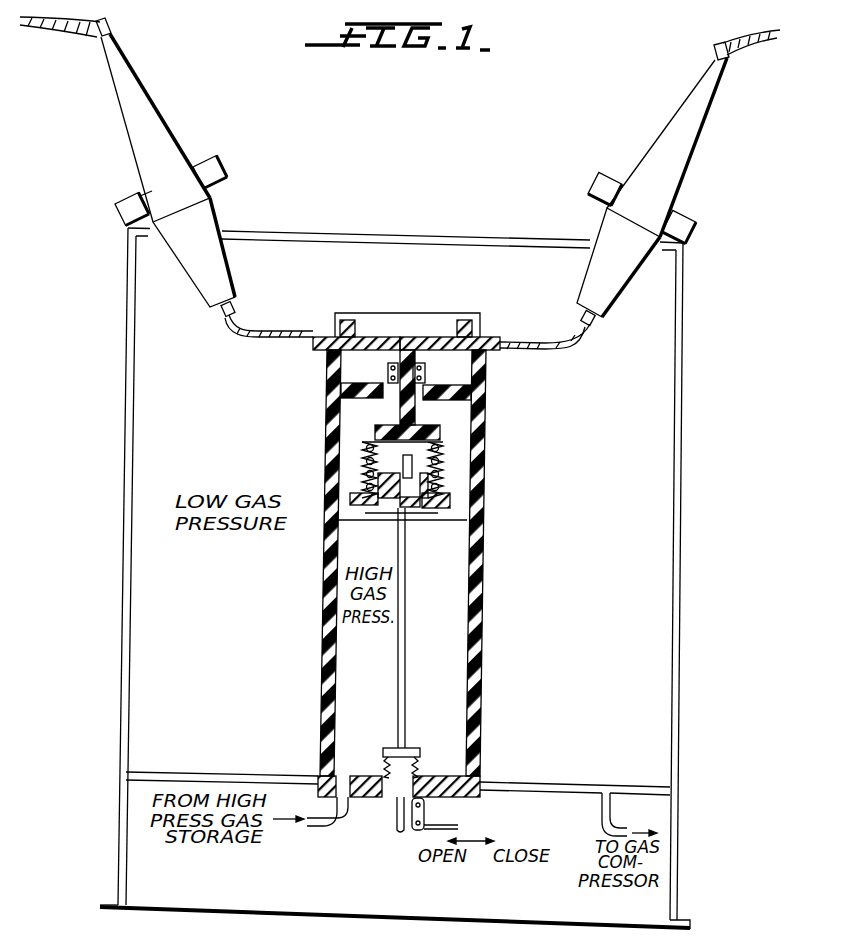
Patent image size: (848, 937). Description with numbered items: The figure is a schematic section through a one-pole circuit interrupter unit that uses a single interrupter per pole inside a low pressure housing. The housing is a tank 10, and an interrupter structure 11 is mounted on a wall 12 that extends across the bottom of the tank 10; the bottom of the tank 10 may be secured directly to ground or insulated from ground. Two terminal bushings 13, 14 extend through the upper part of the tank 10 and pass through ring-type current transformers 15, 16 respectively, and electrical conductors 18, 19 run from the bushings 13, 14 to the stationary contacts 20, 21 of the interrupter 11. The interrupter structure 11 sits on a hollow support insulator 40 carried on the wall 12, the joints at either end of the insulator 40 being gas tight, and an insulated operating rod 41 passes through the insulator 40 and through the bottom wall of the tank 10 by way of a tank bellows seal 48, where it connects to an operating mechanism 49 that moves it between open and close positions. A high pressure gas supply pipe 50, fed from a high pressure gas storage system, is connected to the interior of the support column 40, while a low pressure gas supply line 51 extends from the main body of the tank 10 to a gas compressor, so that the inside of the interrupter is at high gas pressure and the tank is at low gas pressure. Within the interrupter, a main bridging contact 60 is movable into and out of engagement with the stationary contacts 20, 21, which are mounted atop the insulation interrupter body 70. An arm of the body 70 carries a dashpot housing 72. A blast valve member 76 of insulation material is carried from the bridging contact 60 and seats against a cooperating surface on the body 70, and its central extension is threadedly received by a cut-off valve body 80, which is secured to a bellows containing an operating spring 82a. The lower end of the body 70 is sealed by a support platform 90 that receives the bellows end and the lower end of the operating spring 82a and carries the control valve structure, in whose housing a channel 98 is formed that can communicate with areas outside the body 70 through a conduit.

The tank 10 is at (684, 549).
The interrupter structure 11 is at (406, 572).
The wall 12 is at (544, 776).
The terminal bushing 13 is at (156, 109).
The terminal bushing 14 is at (686, 158).
The ring-type current transformer 15 is at (228, 167).
The ring-type current transformer 16 is at (618, 160).
The electrical conductor 18 is at (258, 339).
The electrical conductor 19 is at (550, 346).
The stationary contact 20 is at (312, 351).
The stationary contact 21 is at (498, 355).
The hollow support insulator 40 is at (487, 616).
The insulated operating rod 41 is at (407, 679).
The tank bellows seal 48 is at (416, 766).
The operating mechanism 49 is at (411, 827).
The high pressure gas supply pipe 50 is at (328, 833).
The low pressure gas supply line 51 is at (601, 800).
The main bridging contact 60 is at (426, 318).
The interrupter body 70 is at (327, 438).
The dashpot housing 72 is at (388, 375).
The blast valve member 76 is at (386, 340).
The cut-off valve body 80 is at (427, 440).
The operating spring 82a is at (445, 477).
The support platform 90 is at (353, 505).
The channel 98 is at (378, 459).